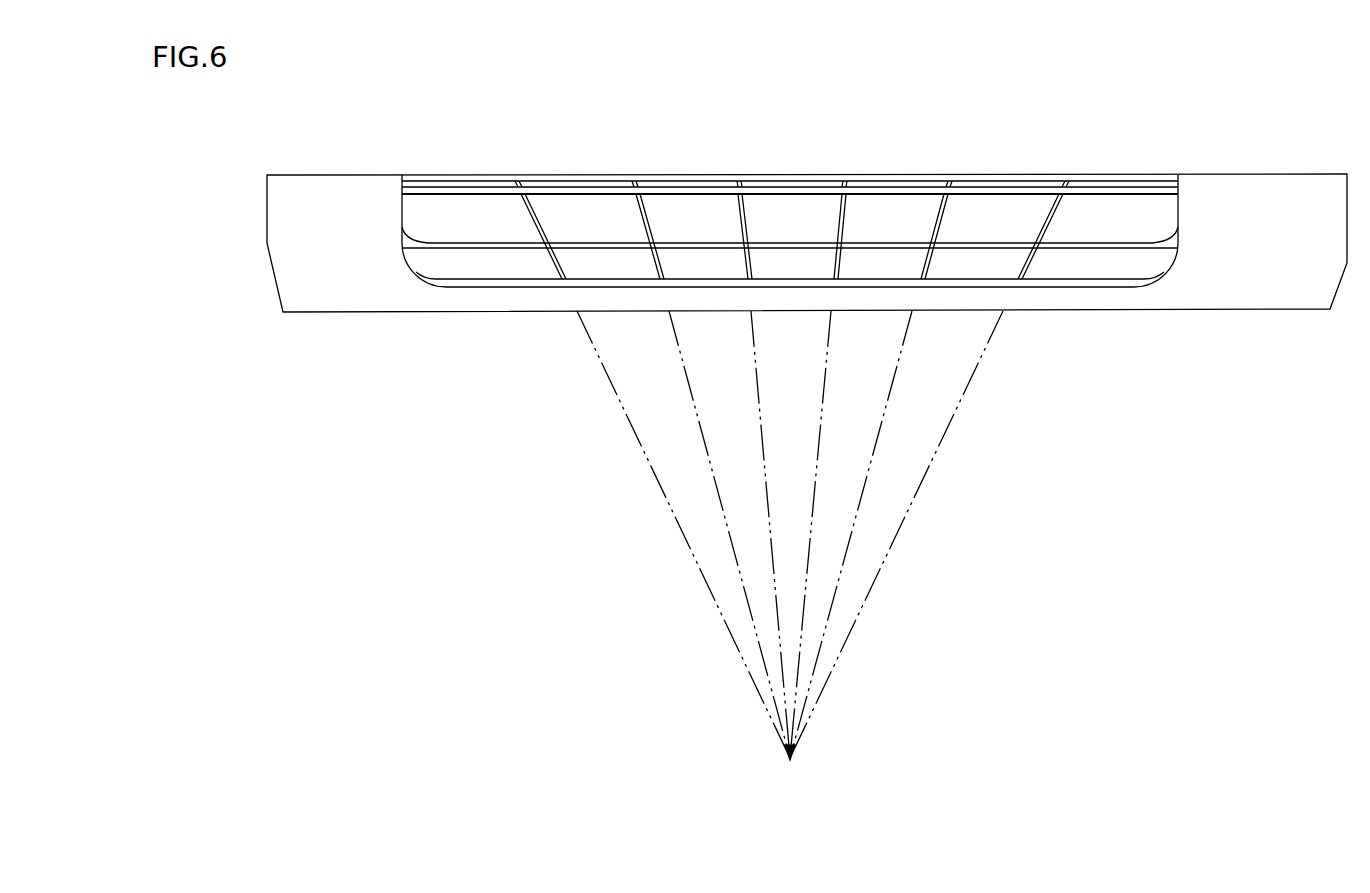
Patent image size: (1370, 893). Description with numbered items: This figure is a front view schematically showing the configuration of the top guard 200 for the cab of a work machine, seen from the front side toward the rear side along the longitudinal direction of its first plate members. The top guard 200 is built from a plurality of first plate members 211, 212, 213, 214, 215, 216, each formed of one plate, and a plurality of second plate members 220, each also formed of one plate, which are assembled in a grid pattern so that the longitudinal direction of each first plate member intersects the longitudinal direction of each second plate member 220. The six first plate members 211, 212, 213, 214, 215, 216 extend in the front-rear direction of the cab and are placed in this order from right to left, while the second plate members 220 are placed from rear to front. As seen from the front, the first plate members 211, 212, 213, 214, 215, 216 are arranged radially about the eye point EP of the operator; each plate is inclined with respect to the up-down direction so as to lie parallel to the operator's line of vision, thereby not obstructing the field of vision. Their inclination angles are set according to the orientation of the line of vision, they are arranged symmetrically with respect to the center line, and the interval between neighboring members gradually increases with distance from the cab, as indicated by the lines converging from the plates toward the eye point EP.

The top guard 200 is at (1202, 135).
The first plate member 211 is at (522, 203).
The first plate member 212 is at (636, 203).
The first plate member 213 is at (737, 203).
The first plate member 214 is at (845, 203).
The first plate member 215 is at (946, 203).
The first plate member 216 is at (1058, 203).
The second plate member 220 is at (433, 212).
The eye point EP is at (793, 761).